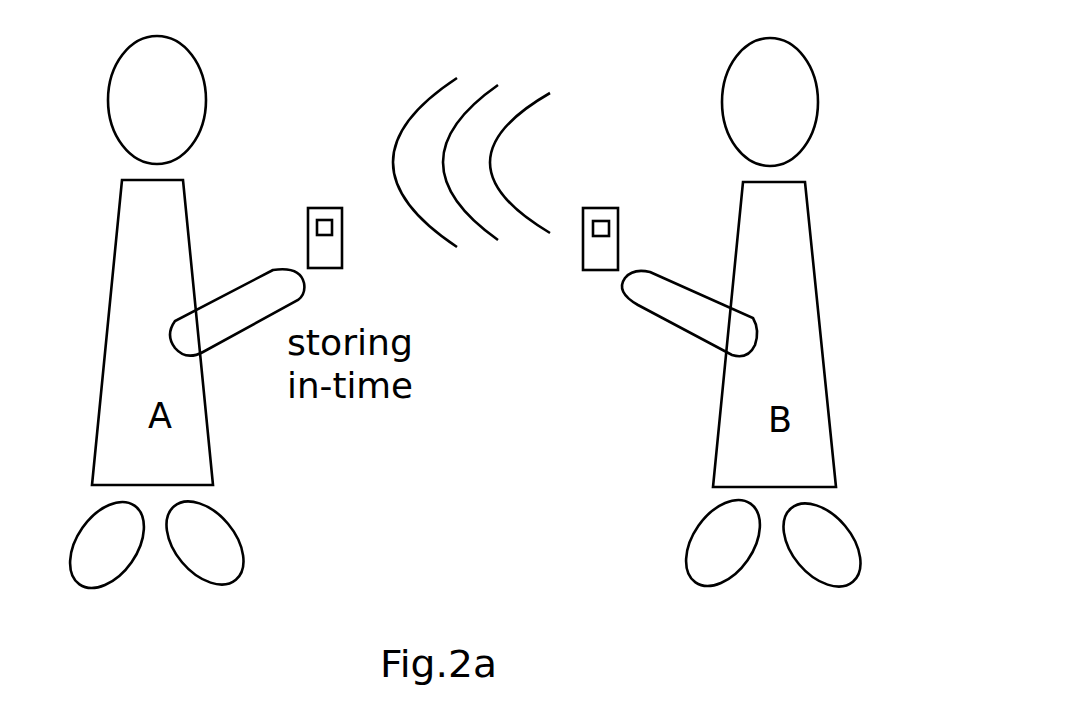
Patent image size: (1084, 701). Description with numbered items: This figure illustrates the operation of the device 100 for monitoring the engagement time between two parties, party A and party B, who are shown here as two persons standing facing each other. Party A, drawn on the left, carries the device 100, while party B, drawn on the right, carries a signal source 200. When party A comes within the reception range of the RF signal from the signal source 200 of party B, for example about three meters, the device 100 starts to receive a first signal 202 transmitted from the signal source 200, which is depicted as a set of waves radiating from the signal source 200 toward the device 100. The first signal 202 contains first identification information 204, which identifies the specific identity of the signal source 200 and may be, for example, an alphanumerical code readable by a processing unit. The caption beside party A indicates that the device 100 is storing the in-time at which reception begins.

The device 100 is at (310, 205).
The signal source 200 is at (597, 265).
The first signal 202 is at (580, 123).
The first identification information 204 is at (543, 136).